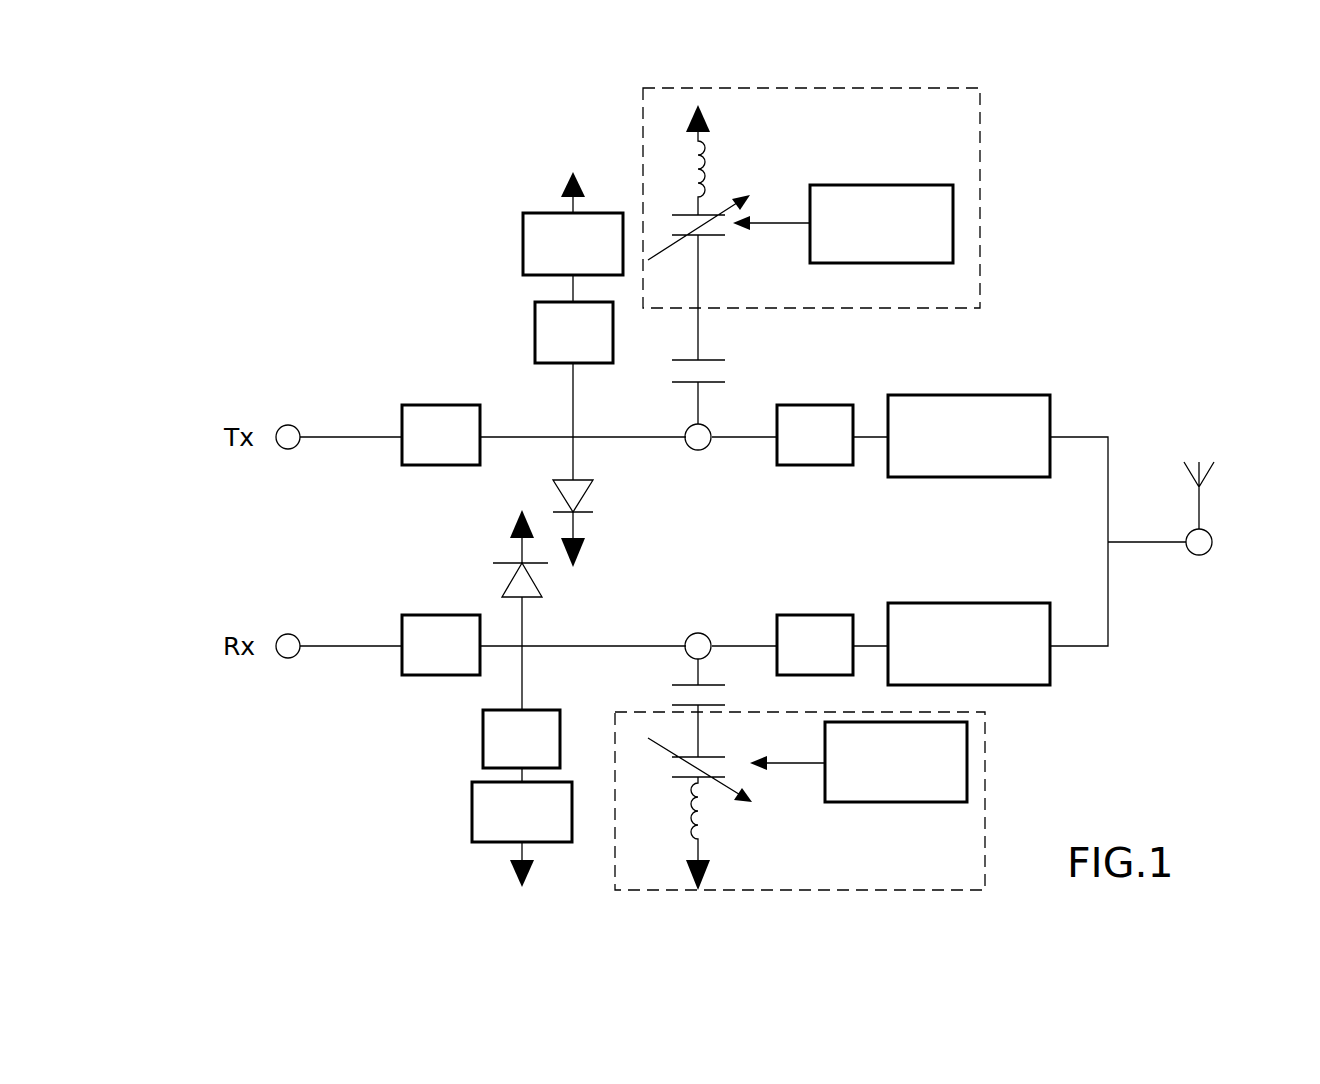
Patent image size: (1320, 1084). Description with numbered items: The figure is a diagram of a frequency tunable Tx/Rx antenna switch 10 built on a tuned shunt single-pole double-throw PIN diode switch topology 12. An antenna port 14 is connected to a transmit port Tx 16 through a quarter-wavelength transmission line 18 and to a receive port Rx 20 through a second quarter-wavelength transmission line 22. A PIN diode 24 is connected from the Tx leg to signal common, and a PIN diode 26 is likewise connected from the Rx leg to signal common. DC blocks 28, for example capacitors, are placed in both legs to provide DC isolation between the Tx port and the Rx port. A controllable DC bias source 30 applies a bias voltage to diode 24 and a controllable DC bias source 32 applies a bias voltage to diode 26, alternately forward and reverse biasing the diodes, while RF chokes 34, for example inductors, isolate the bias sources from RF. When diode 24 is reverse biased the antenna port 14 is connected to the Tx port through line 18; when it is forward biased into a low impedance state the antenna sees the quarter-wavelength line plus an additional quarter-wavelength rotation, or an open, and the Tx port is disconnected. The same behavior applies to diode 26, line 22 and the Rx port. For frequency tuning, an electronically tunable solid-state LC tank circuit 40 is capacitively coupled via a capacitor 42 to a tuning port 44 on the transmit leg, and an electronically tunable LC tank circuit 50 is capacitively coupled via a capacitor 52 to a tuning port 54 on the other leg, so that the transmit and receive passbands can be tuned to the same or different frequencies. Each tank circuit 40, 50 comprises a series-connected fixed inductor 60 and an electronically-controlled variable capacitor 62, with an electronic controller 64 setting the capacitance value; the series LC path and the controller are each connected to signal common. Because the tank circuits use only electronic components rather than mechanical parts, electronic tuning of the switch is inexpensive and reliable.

The frequency tunable Tx/Rx antenna switch 10 is at (341, 250).
The tuned shunt single-pole double-throw PIN diode switch topology 12 is at (392, 527).
The antenna port 14 is at (1198, 556).
The transmit port Tx 16 is at (296, 425).
The quarter-wavelength transmission line 18 is at (957, 395).
The receive port Rx 20 is at (288, 658).
The quarter-wavelength transmission line 22 is at (975, 603).
The PIN diode 24 is at (593, 494).
The PIN diode 26 is at (505, 587).
The DC block 28 is at (430, 405).
The controllable DC bias source 30 is at (523, 240).
The controllable DC bias source 32 is at (472, 814).
The RF choke 34 is at (535, 328).
The electronically tunable solid-state LC tank circuit 40 is at (982, 163).
The capacitor 42 is at (722, 358).
The tuning port 44 is at (702, 450).
The electronically tunable LC tank circuit 50 is at (988, 797).
The capacitor 52 is at (672, 685).
The tuning port 54 is at (696, 633).
The fixed inductor 60 is at (702, 160).
The electronically-controlled variable capacitor 62 is at (722, 240).
The electronic controller 64 is at (884, 185).